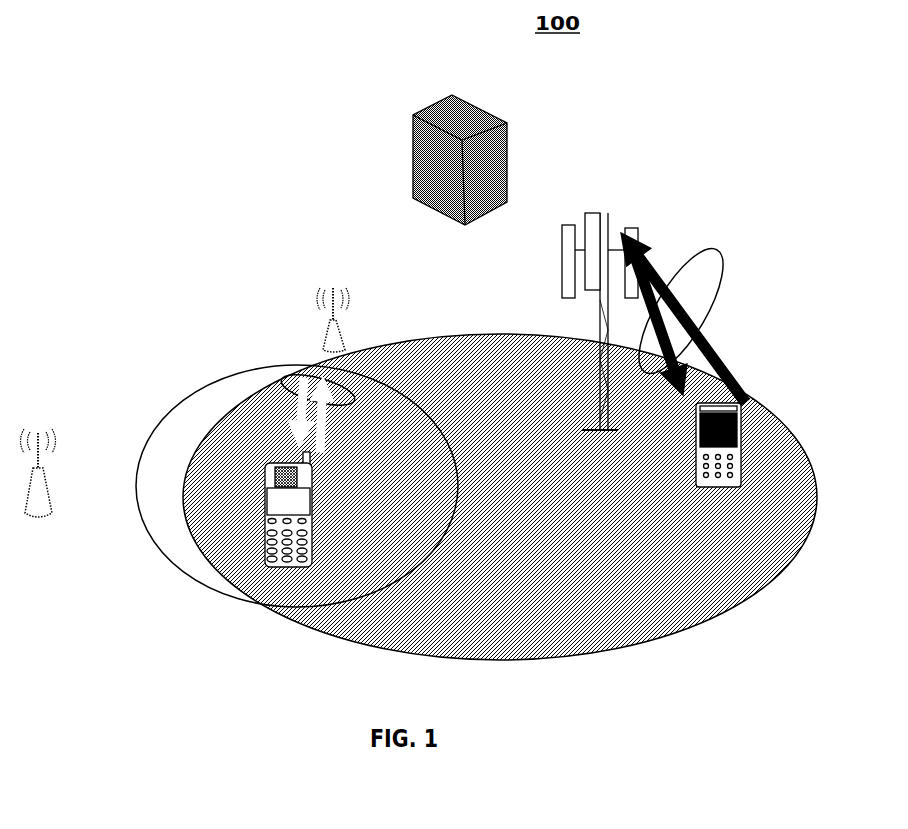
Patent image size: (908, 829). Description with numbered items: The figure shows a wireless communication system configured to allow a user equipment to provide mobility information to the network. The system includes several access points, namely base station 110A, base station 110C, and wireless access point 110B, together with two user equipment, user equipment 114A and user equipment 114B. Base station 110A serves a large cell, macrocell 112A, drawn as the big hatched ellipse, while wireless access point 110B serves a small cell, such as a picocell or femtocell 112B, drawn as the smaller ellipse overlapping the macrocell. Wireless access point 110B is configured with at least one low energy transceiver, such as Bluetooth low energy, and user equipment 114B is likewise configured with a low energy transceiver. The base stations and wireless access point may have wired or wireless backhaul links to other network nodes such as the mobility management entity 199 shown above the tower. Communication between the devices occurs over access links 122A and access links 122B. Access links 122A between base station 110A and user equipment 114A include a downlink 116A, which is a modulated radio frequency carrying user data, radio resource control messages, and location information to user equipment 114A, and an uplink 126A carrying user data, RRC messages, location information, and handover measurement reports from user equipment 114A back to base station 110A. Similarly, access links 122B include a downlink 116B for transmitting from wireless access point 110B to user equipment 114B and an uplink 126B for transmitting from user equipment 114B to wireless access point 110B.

The mobility management entity 199 is at (505, 127).
The base station 110A is at (668, 200).
The wireless access point 110B is at (393, 290).
The base station 110C is at (98, 430).
The macrocell 112A is at (673, 632).
The small cell 112B is at (170, 560).
The user equipment 114A is at (750, 410).
The user equipment 114B is at (260, 588).
The downlink 116A is at (652, 369).
The downlink 116B is at (272, 412).
The access links 122A is at (717, 250).
The access links 122B is at (283, 377).
The uplink 126A is at (730, 370).
The uplink 126B is at (353, 414).